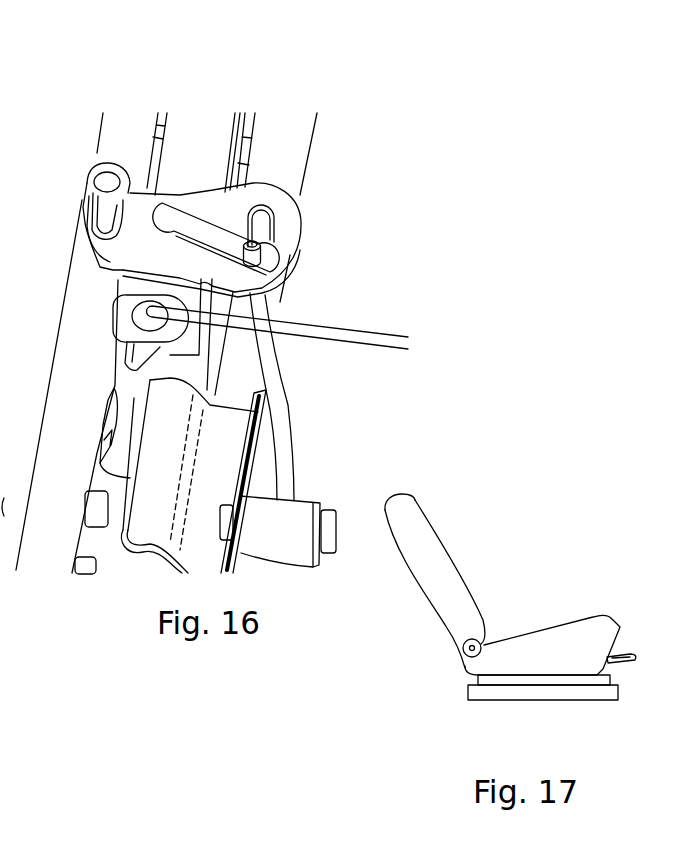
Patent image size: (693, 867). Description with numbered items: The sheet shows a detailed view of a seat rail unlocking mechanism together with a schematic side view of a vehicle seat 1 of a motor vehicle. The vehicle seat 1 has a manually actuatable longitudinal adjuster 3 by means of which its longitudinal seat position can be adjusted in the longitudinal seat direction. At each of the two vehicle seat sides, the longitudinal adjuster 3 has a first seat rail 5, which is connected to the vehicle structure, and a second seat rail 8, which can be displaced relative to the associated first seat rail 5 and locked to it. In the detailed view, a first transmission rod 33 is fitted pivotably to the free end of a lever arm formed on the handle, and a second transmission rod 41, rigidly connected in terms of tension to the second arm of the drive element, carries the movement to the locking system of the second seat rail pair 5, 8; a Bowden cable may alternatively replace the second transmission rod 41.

In FIG. 17, the vehicle seat 1 is at (495, 529).
In FIG. 17, the longitudinal adjuster 3 is at (628, 669).
In FIG. 17, the first seat rail 5 is at (540, 698).
In FIG. 17, the second seat rail 8 is at (560, 676).
In FIG. 16, the first transmission rod 33 is at (282, 420).
In FIG. 16, the second transmission rod 41 is at (385, 335).